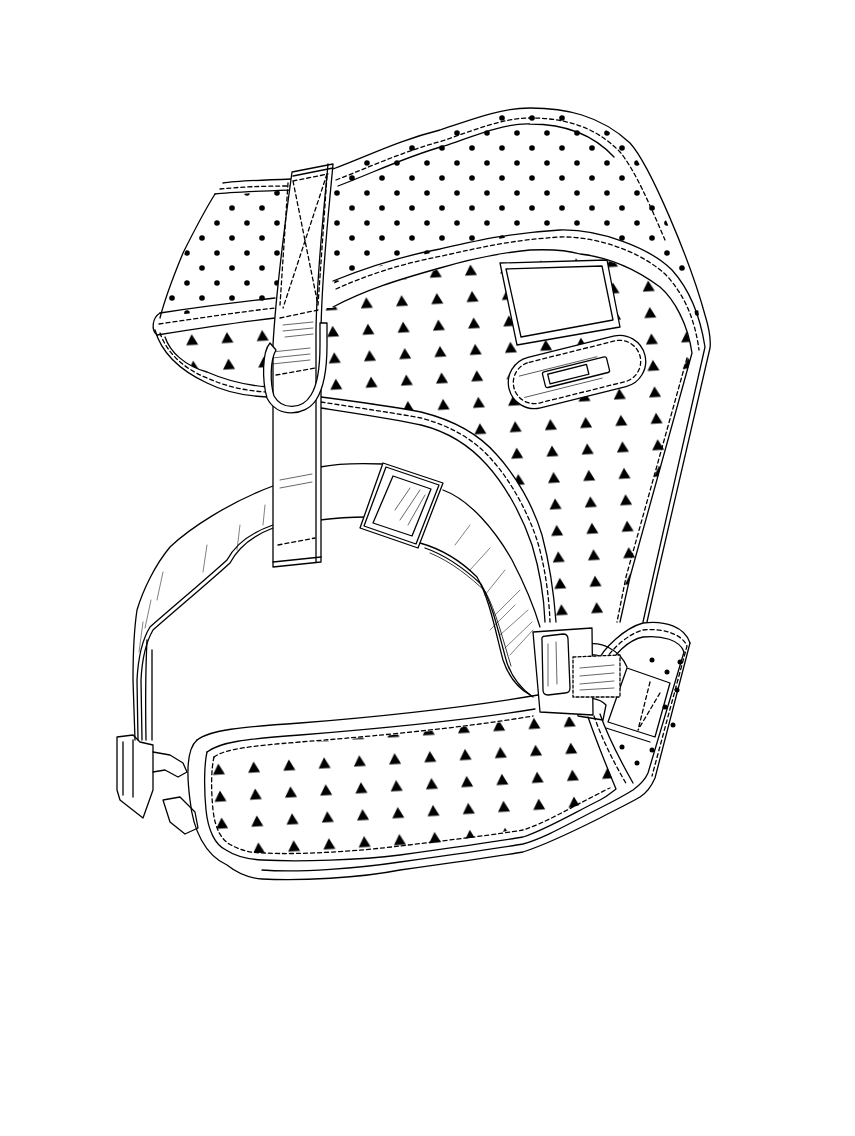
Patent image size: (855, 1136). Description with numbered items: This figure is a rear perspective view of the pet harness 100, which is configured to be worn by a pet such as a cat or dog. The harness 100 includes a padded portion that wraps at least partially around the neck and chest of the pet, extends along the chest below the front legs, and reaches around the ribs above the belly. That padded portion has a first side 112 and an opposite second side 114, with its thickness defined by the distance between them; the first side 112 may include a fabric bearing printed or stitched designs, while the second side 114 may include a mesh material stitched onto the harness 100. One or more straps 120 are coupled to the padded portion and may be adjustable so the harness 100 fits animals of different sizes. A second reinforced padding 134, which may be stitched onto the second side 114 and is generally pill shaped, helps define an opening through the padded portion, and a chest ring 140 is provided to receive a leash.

The harness 100 is at (96, 126).
The first side 112 is at (628, 187).
The second side 114 is at (403, 832).
The straps 120 is at (173, 553).
The second reinforced padding 134 is at (637, 353).
The chest ring 140 is at (584, 378).